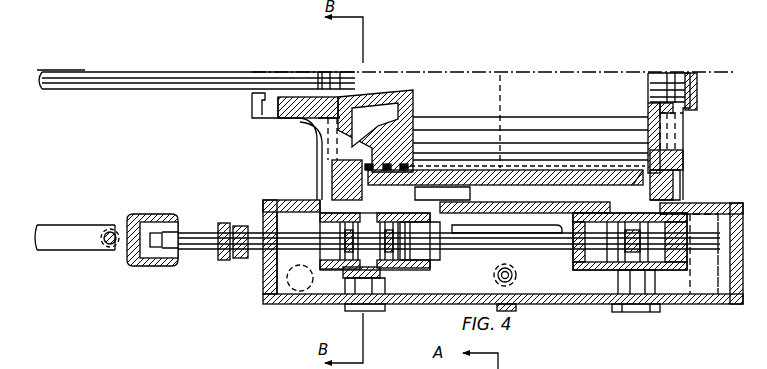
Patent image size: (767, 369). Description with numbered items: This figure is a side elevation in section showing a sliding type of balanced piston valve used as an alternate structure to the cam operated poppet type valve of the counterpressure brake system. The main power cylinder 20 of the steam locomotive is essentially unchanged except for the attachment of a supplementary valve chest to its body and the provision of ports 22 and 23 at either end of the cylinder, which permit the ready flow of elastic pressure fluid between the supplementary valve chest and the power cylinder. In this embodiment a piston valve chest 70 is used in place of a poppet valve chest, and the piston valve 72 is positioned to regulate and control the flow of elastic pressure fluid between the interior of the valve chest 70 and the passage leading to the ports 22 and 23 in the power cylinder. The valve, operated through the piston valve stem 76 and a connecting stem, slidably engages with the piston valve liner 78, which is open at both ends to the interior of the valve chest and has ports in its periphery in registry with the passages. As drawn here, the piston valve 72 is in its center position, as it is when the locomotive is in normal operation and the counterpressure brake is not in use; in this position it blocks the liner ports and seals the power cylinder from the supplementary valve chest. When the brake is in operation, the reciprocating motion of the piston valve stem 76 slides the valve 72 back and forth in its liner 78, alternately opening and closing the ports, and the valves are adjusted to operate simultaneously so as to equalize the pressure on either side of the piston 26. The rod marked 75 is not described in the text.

The main power cylinder 20 is at (555, 136).
The port 22 is at (372, 214).
The port 23 is at (640, 197).
The piston 26 is at (400, 113).
The valve chest 70 is at (503, 256).
The piston valve 72 is at (408, 252).
The push rod 75 is at (193, 250).
The piston valve stem 76 is at (462, 238).
The piston valve liner 78 is at (683, 268).